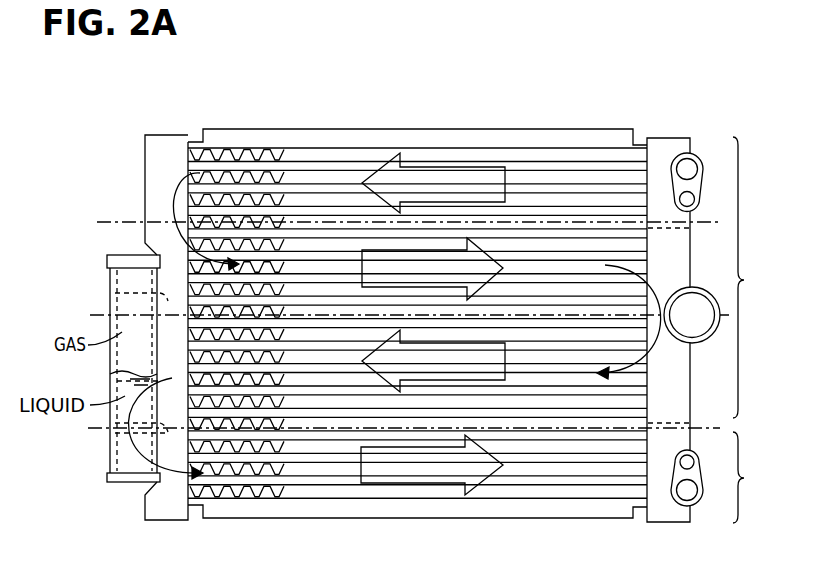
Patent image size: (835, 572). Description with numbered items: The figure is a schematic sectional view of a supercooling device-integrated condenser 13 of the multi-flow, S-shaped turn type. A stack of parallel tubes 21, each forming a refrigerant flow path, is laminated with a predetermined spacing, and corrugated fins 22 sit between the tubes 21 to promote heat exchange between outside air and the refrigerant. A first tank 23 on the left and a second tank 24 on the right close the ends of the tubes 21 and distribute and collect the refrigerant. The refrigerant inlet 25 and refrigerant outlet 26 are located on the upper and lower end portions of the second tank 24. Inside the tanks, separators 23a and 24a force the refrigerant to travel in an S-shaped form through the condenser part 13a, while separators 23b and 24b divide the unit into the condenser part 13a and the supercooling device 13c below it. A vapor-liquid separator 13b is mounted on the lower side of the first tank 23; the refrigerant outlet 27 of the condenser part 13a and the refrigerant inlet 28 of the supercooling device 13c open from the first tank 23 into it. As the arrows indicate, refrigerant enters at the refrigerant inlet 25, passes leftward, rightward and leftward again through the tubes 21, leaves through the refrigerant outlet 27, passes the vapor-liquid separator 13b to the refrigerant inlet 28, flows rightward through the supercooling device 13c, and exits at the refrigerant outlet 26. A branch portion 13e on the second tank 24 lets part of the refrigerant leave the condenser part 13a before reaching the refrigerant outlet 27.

The supercooling device-integrated condenser 13 is at (600, 128).
The condenser part 13a is at (757, 277).
The vapor-liquid separator 13b is at (107, 257).
The supercooling device 13c is at (758, 477).
The branch portion 13e is at (696, 288).
The tubes 21 is at (320, 160).
The fins 22 is at (246, 152).
The first tank 23 is at (174, 150).
The separator 23a is at (110, 296).
The separator 23b is at (112, 448).
The second tank 24 is at (667, 150).
The separator 24a is at (663, 230).
The separator 24b is at (665, 415).
The refrigerant inlet 25 is at (700, 152).
The refrigerant outlet 26 is at (699, 507).
The refrigerant outlet of the condenser part 27 is at (120, 366).
The refrigerant inlet of the supercooling device 28 is at (145, 464).